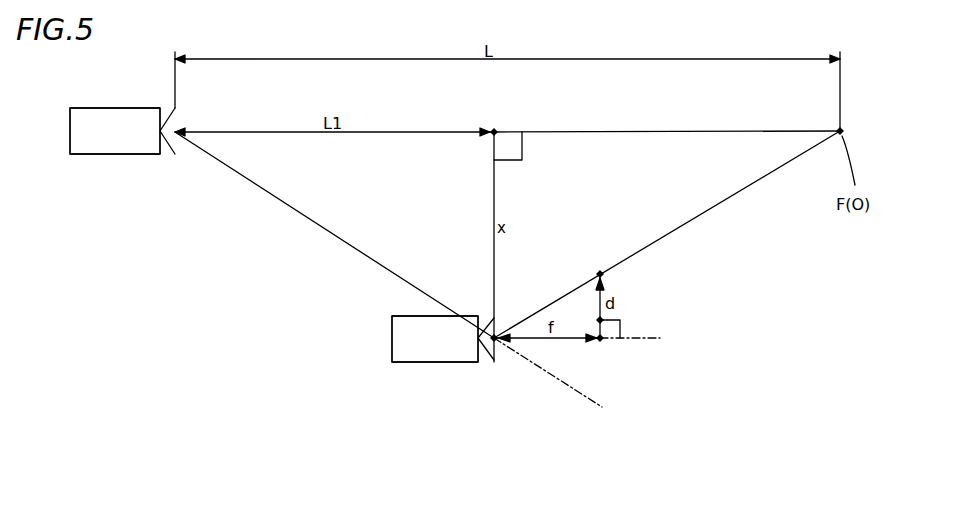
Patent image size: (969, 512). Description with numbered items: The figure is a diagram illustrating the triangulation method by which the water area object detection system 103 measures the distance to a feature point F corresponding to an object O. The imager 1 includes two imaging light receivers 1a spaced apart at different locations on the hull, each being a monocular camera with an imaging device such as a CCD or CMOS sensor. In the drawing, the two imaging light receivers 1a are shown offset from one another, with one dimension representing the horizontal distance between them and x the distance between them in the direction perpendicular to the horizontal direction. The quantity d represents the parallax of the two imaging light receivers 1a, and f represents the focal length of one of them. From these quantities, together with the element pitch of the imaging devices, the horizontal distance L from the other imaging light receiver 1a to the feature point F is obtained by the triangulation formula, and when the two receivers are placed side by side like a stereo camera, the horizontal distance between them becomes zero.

The imager 1 is at (112, 100).
The imaging light receiver 1a is at (80, 107).
The water area object detection system 103 is at (388, 328).